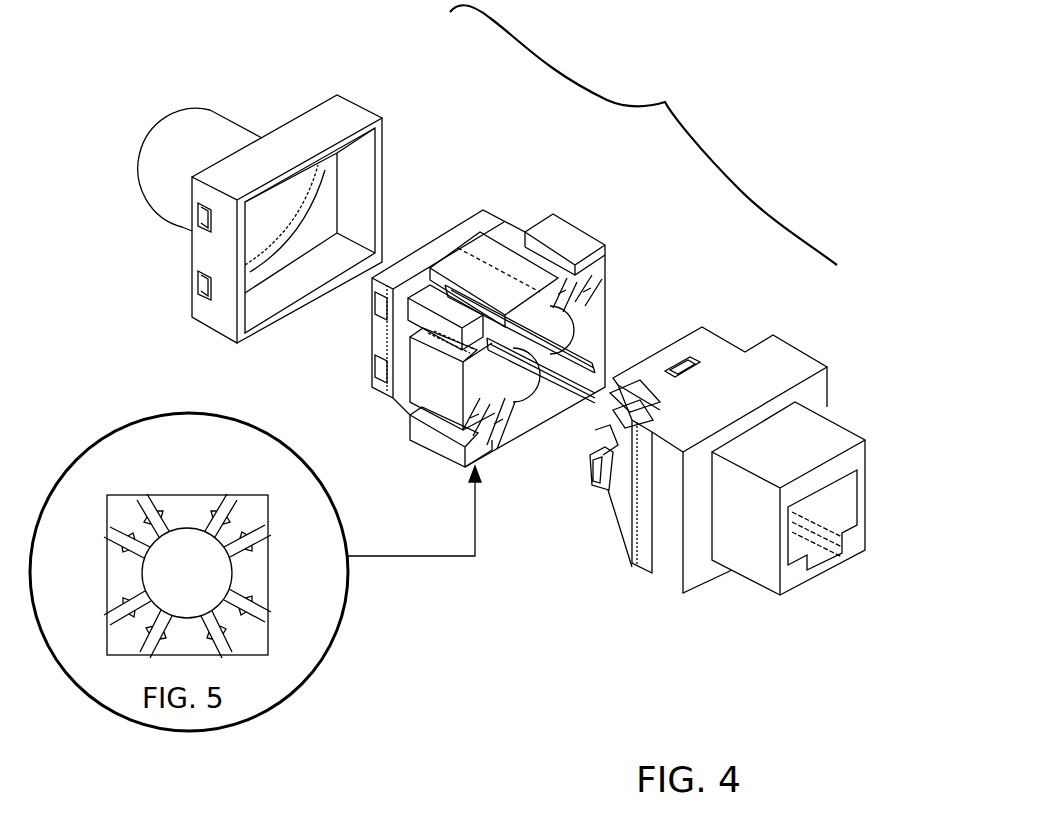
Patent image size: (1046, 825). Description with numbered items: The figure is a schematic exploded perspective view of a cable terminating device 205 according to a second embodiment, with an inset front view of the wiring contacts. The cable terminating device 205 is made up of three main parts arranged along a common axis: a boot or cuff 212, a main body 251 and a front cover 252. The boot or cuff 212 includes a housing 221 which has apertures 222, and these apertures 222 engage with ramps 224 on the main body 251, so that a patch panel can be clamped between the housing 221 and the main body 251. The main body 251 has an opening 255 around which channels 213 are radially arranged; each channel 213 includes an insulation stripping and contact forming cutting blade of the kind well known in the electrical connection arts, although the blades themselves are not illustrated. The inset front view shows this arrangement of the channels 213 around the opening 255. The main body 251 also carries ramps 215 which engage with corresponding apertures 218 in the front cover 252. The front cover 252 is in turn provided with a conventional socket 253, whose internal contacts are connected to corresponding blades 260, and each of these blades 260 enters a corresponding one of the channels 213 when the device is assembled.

In FIG. 4, the cable terminating device 205 is at (643, 135).
In FIG. 4, the boot or cuff 212 is at (268, 180).
In FIG. 4, the housing 221 is at (348, 115).
In FIG. 4, the apertures 222 is at (202, 287).
In FIG. 4, the ramps 224 is at (377, 370).
In FIG. 4, the ramps 215 is at (478, 347).
In FIG. 4, the main body 251 is at (560, 203).
In FIG. 4, the channels 213 is at (607, 270).
In FIG. 5, the channels 213 is at (265, 528).
In FIG. 4, the opening 255 is at (522, 390).
In FIG. 5, the opening 255 is at (187, 573).
In FIG. 4, the apertures 218 is at (681, 362).
In FIG. 4, the front cover 252 is at (711, 458).
In FIG. 4, the socket 253 is at (753, 562).
In FIG. 4, the blades 260 is at (605, 432).